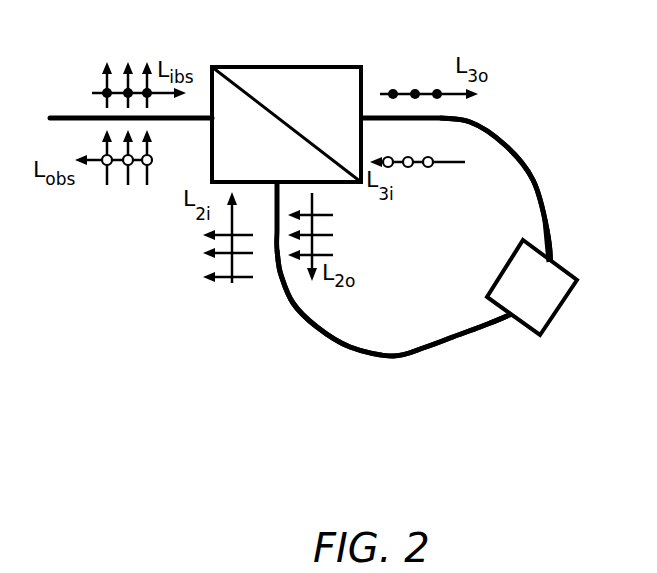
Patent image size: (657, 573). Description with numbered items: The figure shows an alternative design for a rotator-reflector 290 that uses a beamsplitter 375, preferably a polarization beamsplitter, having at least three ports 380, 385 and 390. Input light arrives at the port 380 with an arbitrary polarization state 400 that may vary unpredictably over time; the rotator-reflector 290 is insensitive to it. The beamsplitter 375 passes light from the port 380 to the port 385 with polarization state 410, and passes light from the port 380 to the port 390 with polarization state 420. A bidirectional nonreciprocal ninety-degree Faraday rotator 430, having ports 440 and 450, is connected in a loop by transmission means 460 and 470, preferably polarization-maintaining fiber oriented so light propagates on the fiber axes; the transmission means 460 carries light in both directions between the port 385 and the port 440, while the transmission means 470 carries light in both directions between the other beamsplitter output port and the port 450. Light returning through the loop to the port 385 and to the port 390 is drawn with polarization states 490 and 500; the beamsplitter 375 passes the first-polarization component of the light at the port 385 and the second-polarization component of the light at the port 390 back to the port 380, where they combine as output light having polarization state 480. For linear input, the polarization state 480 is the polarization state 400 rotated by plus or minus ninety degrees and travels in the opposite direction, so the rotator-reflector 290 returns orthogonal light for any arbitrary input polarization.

The rotator-reflector 290 is at (302, 410).
The beamsplitter 375 is at (272, 72).
The port 380 is at (233, 125).
The port 385 is at (285, 167).
The port 390 is at (332, 125).
The polarization state 400 is at (128, 65).
The polarization state 410 is at (326, 233).
The polarization state 420 is at (398, 88).
The Faraday rotator 430 is at (552, 312).
The port 440 is at (515, 318).
The port 450 is at (548, 258).
The transmission means 460 is at (430, 357).
The transmission means 470 is at (563, 158).
The polarization state 480 is at (120, 166).
The light polarization entering second port 490 is at (226, 279).
The light polarization entering third port 500 is at (431, 166).